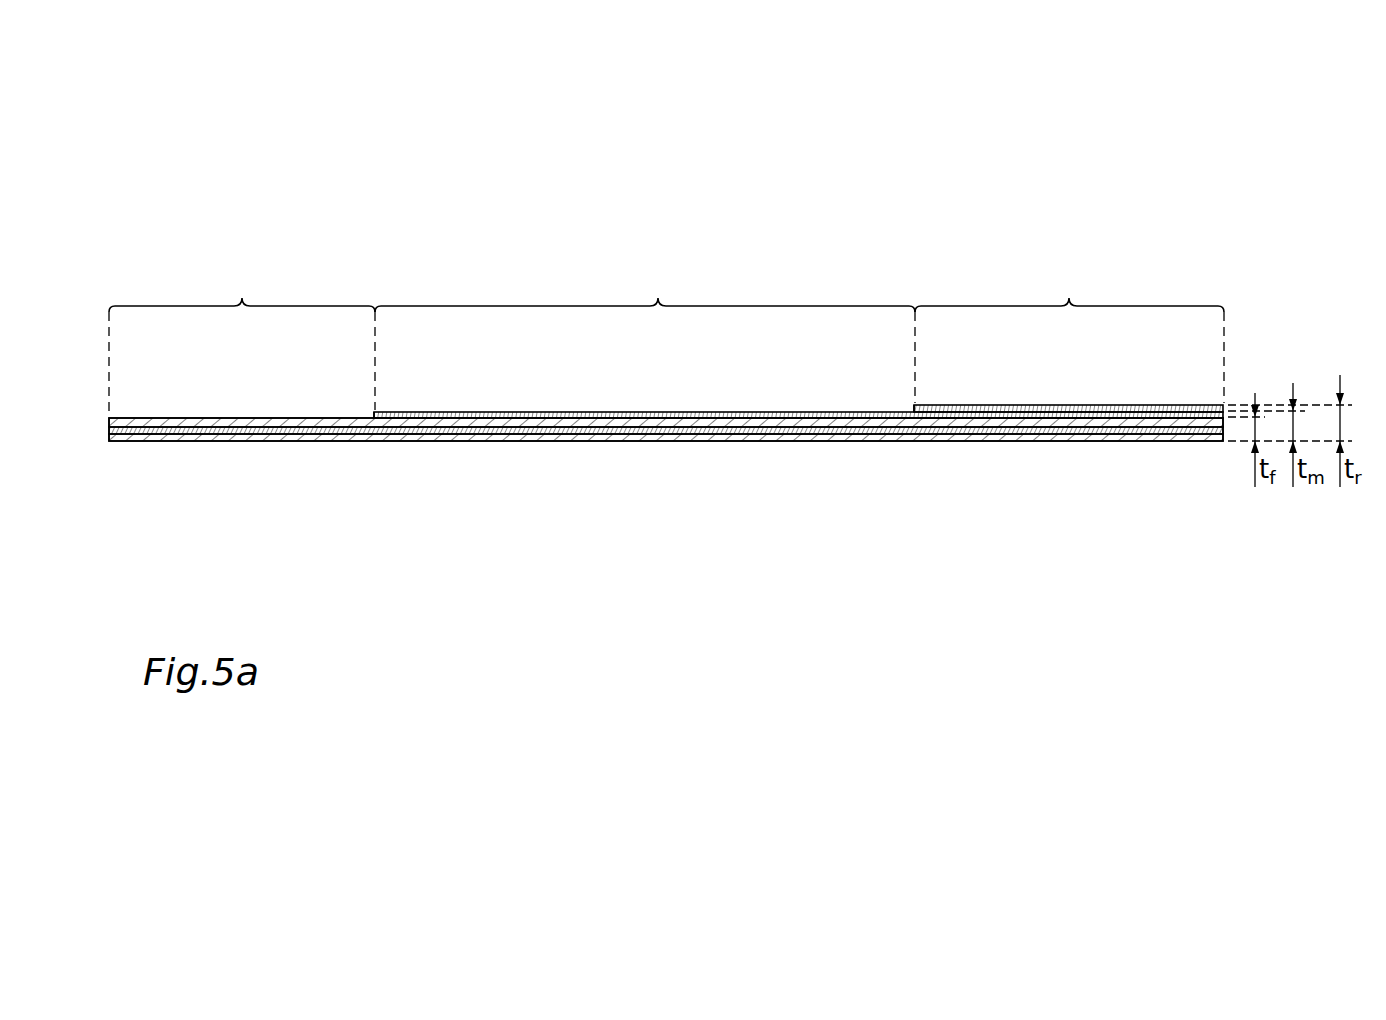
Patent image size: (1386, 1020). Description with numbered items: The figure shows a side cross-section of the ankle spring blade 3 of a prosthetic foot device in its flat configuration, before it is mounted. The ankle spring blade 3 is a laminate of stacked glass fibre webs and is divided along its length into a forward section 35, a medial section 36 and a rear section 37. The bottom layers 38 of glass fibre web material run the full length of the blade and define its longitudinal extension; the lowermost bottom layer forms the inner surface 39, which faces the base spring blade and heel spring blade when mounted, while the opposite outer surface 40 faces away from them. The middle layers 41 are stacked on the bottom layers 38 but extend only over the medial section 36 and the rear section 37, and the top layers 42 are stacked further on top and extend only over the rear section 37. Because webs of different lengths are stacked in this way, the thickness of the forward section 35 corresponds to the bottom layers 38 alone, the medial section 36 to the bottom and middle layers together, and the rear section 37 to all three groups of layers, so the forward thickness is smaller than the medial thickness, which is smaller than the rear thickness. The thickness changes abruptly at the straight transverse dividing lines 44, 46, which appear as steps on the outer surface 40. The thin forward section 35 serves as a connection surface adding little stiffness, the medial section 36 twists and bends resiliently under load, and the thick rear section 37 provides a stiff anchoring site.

The ankle spring blade 3 is at (268, 108).
The forward section 35 is at (242, 339).
The medial section 36 is at (645, 336).
The rear section 37 is at (1069, 333).
The bottom layers 38 is at (202, 422).
The inner surface 39 is at (755, 441).
The outer surface 40 is at (175, 417).
The middle layers 41 is at (520, 412).
The top layers 42 is at (985, 405).
The dividing line 44 is at (372, 413).
The dividing line 46 is at (913, 406).